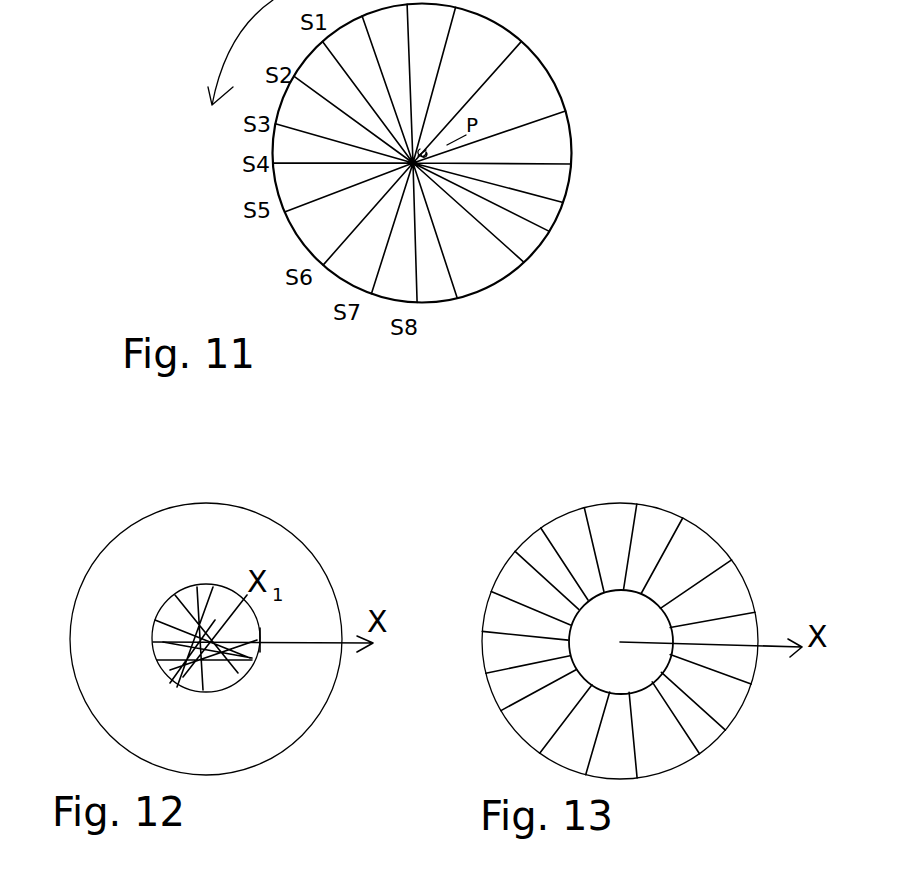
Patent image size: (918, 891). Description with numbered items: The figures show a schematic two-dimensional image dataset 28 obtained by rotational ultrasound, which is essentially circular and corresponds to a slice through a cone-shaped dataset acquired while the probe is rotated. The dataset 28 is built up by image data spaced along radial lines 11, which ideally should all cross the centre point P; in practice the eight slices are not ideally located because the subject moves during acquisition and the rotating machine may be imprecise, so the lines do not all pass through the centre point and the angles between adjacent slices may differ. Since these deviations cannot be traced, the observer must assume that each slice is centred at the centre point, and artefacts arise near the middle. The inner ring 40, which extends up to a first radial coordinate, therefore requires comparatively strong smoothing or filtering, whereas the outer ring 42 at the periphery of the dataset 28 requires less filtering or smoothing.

In FIG. 11, the radial lines 11 is at (490, 77).
In FIG. 11, the 2D image dataset 28 is at (572, 142).
In FIG. 12, the 2D image dataset 28 is at (310, 549).
In FIG. 13, the 2D image dataset 28 is at (673, 523).
In FIG. 12, the inner ring 40 is at (170, 608).
In FIG. 13, the outer ring 42 is at (717, 593).